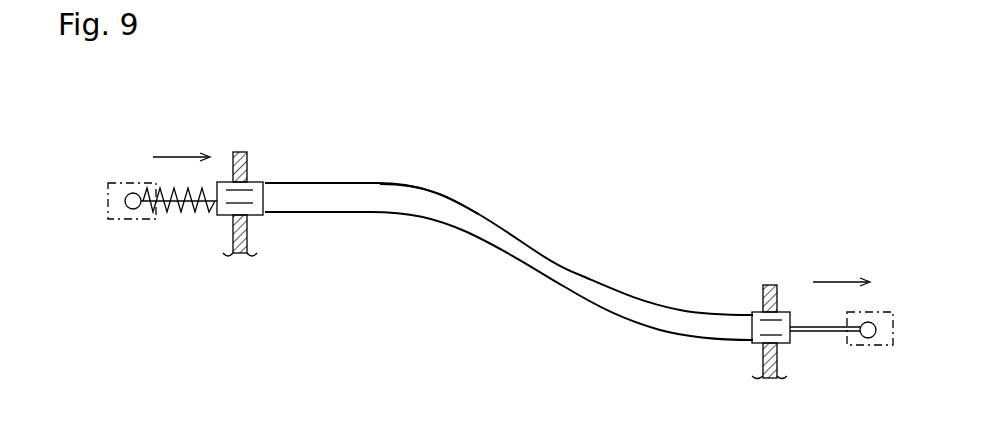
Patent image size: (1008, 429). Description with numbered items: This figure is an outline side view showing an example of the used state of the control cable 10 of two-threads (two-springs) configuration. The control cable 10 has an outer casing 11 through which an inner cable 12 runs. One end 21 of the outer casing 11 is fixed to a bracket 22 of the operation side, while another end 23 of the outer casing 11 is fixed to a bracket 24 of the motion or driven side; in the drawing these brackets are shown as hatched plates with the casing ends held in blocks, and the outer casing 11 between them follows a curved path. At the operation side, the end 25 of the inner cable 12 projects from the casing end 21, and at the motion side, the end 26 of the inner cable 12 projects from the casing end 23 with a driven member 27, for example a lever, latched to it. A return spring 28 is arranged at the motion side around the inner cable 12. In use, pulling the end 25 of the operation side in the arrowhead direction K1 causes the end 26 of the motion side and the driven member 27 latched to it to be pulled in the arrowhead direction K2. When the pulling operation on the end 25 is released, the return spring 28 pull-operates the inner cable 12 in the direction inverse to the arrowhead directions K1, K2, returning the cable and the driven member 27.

The control cable 10 is at (582, 252).
The outer casing 11 is at (473, 217).
The inner cable 12 is at (796, 335).
The one end of the outer casing 21 is at (760, 345).
The bracket of operation side 22 is at (763, 295).
The another end of the outer casing 23 is at (263, 183).
The bracket of motion side 24 is at (240, 151).
The end of the operation side of the inner cable 25 is at (868, 346).
The end of the motion side 26 is at (128, 194).
The driven member 27 is at (113, 222).
The return spring 28 is at (188, 213).
The arrowhead direction K1 is at (835, 282).
The arrowhead direction K2 is at (177, 157).